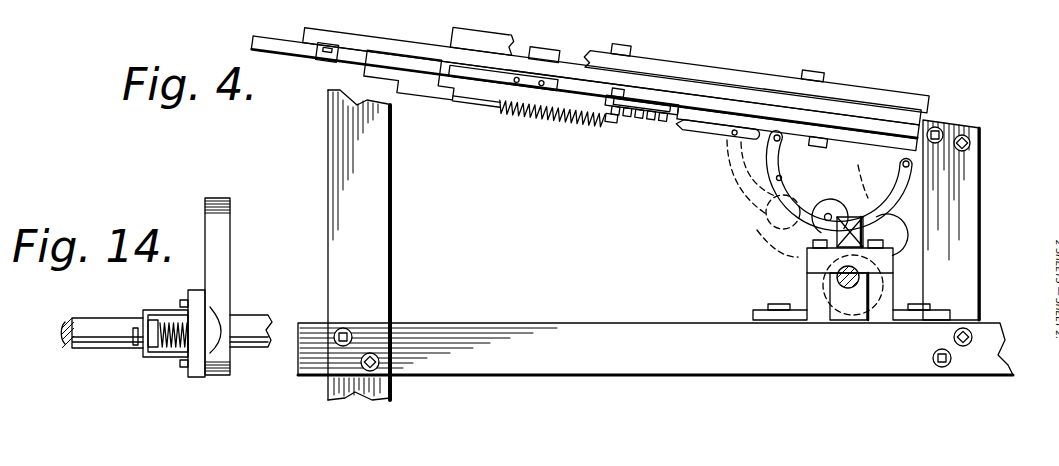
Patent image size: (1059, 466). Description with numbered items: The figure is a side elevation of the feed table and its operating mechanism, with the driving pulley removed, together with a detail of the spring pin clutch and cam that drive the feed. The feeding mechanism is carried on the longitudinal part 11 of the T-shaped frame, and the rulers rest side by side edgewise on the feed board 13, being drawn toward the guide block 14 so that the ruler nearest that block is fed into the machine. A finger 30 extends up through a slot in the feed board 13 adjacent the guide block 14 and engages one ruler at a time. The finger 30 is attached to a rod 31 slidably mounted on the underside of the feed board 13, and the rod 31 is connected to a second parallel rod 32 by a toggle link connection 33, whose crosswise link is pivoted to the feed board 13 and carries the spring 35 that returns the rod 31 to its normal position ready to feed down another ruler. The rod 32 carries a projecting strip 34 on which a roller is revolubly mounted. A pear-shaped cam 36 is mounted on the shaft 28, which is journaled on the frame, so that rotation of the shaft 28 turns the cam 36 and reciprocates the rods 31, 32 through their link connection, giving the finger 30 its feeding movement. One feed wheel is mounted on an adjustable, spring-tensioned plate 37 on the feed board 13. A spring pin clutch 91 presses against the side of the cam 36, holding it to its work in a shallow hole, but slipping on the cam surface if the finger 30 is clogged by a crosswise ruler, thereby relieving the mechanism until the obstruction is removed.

In FIG. 4, the part of the frame 11 is at (570, 323).
In FIG. 4, the feed board 13 is at (331, 33).
In FIG. 4, the guide block 14 is at (474, 27).
In FIG. 4, the shaft 28 is at (835, 273).
In FIG. 14, the shaft 28 is at (107, 337).
In FIG. 4, the finger 30 is at (540, 53).
In FIG. 4, the rod 31 is at (311, 62).
In FIG. 4, the second rod 32 is at (715, 133).
In FIG. 4, the toggle link connection 33 is at (617, 127).
In FIG. 4, the projecting strip 34 is at (733, 193).
In FIG. 4, the spring 35 is at (547, 122).
In FIG. 4, the cam 36 is at (893, 233).
In FIG. 14, the cam 36 is at (217, 280).
In FIG. 4, the plate 37 is at (777, 180).
In FIG. 14, the spring pin clutch 91 is at (193, 377).